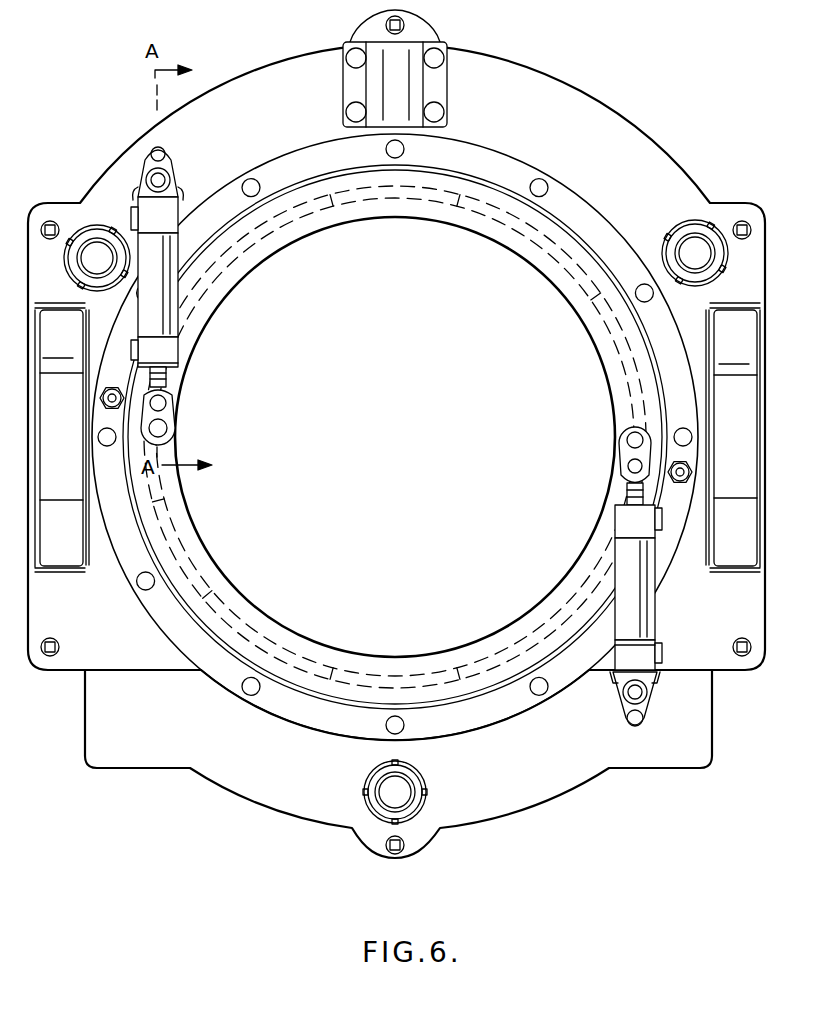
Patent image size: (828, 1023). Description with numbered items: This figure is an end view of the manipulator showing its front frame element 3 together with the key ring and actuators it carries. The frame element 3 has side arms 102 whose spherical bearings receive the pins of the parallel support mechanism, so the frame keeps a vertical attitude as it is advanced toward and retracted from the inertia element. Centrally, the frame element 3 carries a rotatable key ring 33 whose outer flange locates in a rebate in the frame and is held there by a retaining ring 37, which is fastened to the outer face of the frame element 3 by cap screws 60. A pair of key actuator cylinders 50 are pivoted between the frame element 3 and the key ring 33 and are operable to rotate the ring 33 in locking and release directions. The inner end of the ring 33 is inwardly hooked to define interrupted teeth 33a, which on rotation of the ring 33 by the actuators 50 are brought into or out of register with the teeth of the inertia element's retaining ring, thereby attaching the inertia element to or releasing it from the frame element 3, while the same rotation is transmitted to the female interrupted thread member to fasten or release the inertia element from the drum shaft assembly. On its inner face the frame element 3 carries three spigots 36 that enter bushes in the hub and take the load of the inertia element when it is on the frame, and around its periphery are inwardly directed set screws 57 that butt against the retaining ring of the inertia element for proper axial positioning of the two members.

The manipulator frame element 3 is at (272, 80).
The set screws 57 is at (406, 25).
The spigots 36 is at (95, 250).
The cap screws 60 is at (251, 182).
The retaining ring 37 is at (314, 160).
The key ring 33 is at (362, 214).
The interrupted teeth 33a is at (415, 196).
The key actuator cylinders 50 is at (167, 317).
The side arms 102 is at (397, 437).